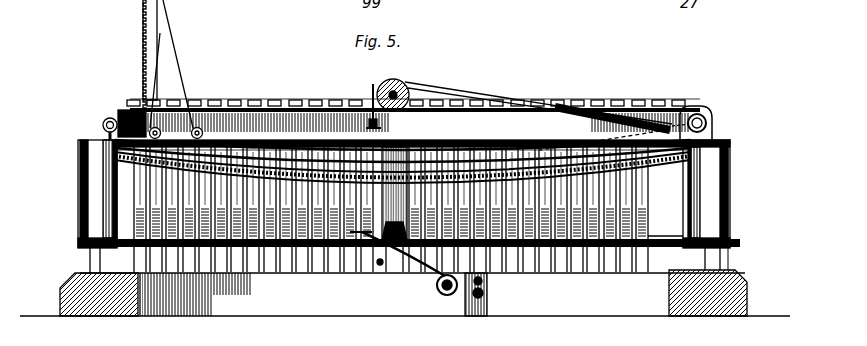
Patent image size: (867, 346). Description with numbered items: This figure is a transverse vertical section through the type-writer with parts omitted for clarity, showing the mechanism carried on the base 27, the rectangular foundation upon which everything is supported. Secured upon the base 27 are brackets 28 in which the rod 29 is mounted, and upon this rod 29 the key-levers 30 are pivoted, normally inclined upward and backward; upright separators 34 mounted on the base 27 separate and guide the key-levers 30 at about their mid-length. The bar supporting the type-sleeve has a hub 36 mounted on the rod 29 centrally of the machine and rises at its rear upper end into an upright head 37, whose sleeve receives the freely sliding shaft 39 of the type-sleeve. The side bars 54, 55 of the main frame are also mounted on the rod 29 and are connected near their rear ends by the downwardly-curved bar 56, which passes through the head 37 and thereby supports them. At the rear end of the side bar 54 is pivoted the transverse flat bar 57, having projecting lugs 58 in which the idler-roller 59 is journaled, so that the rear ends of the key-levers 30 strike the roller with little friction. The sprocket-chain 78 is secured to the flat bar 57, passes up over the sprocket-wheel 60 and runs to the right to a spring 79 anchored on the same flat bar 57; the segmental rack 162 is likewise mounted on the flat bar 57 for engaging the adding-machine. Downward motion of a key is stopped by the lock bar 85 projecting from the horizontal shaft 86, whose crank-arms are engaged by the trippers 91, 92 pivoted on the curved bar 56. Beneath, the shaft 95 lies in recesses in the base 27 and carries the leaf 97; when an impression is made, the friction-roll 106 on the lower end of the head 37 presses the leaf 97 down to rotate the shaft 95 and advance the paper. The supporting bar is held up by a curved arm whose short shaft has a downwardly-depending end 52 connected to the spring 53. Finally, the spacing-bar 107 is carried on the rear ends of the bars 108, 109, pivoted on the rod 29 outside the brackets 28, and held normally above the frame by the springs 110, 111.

The base 27 is at (405, 294).
The brackets 28 is at (88, 261).
The rod 29 is at (668, 244).
The key-levers 30 is at (628, 207).
The upright separators 34 is at (277, 260).
The hub 36 is at (403, 262).
The upright bar or head 37 is at (400, 149).
The shaft 39 is at (405, 83).
The downwardly-depending end 52 is at (487, 281).
The spring 53 is at (487, 296).
The side bar 54 is at (704, 170).
The side bar 55 is at (108, 172).
The downwardly-curved bar 56 is at (316, 152).
The transverse flat bar 57 is at (506, 150).
The projecting lugs 58 is at (123, 108).
The idler-roller 59 is at (292, 110).
The sprocket-wheel 60 is at (390, 80).
The sprocket-chain or punctured metal ribbon 78 is at (487, 96).
The spring 79 is at (609, 110).
The bar or lock 85 is at (360, 234).
The horizontal bar or shaft 86 is at (431, 156).
The tripper 91 is at (227, 152).
The tripper 92 is at (655, 110).
The rod or shaft 95 is at (443, 295).
The leaf 97 is at (433, 270).
The friction-roll 106 is at (380, 266).
The spacing-bar 107 is at (714, 143).
The bar 108 is at (729, 182).
The bar 109 is at (82, 163).
The spring 110 is at (728, 201).
The spring 111 is at (105, 185).
The segmental rack 162 is at (146, 42).